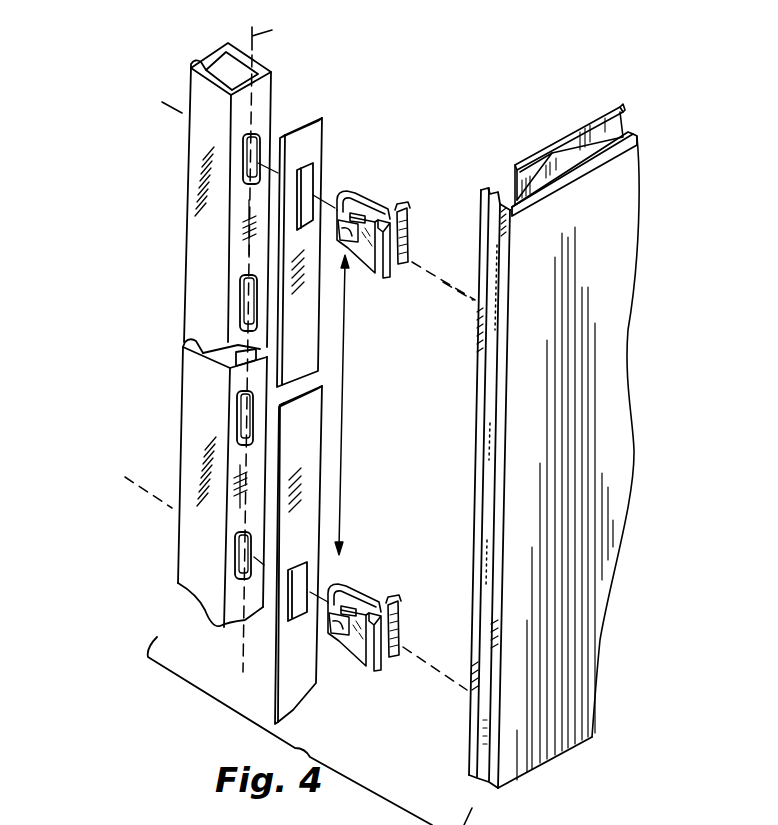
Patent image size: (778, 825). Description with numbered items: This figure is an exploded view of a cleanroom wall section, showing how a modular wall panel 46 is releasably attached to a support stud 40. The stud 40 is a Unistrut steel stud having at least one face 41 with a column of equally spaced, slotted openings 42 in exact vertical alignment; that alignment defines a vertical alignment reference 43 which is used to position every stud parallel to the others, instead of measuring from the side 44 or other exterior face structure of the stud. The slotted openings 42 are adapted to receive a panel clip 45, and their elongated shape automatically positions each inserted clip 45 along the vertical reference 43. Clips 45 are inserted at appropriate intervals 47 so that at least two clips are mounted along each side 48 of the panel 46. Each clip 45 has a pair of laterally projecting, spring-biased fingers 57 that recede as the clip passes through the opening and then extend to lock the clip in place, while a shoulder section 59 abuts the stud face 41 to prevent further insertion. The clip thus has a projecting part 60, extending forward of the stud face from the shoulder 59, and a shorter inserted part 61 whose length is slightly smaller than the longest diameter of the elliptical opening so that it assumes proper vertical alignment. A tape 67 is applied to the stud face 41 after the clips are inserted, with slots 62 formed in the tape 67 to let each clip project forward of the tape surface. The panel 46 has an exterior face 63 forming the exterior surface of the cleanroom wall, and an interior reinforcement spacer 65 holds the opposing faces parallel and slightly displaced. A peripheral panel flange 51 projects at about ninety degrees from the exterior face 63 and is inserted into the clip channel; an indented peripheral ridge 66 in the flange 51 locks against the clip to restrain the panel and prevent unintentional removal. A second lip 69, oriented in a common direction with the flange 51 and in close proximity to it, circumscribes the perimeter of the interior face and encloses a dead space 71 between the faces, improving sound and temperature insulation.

The support stud 40 is at (208, 199).
The face of the stud 41 is at (240, 491).
The slotted openings 42 is at (124, 326).
The vertical alignment reference 43 is at (268, 34).
The side of the stud 44 is at (202, 97).
The panel clip 45 is at (345, 200).
The panel 46 is at (522, 349).
The intervals 47 is at (349, 414).
The side of the wall panel 48 is at (508, 406).
The panel flange 51 is at (471, 775).
The spring-biased fingers 57 is at (348, 248).
The shoulder section 59 is at (388, 210).
The projecting part 60 is at (420, 586).
The inserted part 61 is at (337, 575).
The slots in the tape 62 is at (322, 162).
The exterior face of the panel 63 is at (613, 274).
The interior reinforcement spacer 65 is at (570, 152).
The indented peripheral ridge 66 is at (493, 190).
The tape 67 is at (290, 678).
The second lip 69 is at (516, 217).
The dead space 71 is at (621, 110).